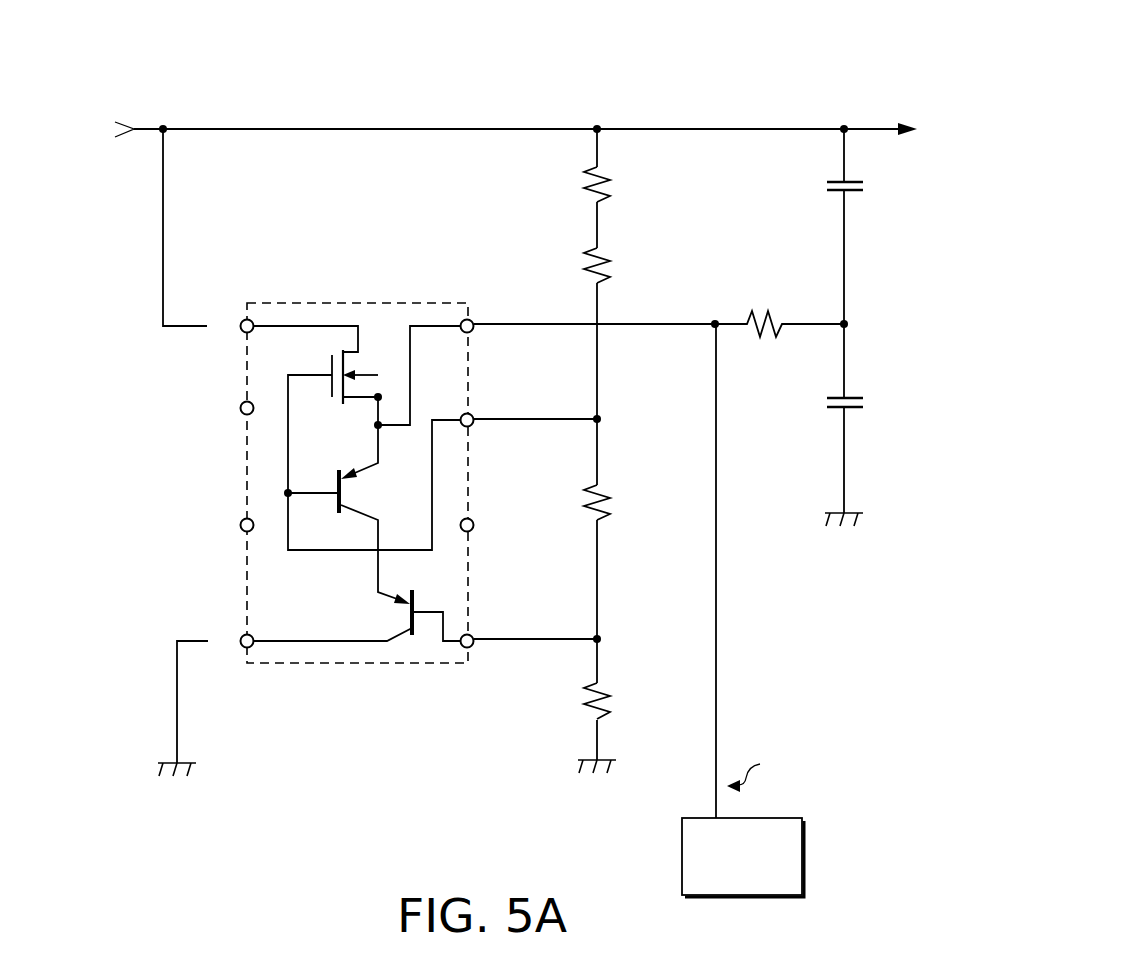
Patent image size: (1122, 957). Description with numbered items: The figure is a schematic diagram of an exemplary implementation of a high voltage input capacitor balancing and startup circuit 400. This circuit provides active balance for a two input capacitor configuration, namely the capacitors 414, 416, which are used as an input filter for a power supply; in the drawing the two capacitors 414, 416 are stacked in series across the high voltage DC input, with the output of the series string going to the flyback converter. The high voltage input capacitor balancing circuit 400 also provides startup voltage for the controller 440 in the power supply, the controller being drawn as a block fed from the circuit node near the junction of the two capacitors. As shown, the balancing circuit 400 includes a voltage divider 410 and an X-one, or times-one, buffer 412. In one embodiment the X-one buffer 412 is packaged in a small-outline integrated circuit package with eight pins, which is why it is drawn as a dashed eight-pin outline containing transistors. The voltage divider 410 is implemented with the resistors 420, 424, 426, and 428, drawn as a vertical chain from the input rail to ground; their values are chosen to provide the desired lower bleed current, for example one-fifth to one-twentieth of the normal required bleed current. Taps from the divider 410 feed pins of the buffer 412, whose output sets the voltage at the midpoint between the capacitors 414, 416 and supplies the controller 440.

The high voltage input capacitor balancing and startup circuit 400 is at (784, 52).
The voltage divider 410 is at (690, 206).
The X1 buffer 412 is at (244, 352).
The capacitor 414 is at (849, 180).
The capacitor 416 is at (849, 396).
The resistor 420 is at (600, 168).
The resistor 424 is at (600, 249).
The resistor 426 is at (602, 491).
The resistor 428 is at (602, 689).
The controller 440 is at (830, 902).